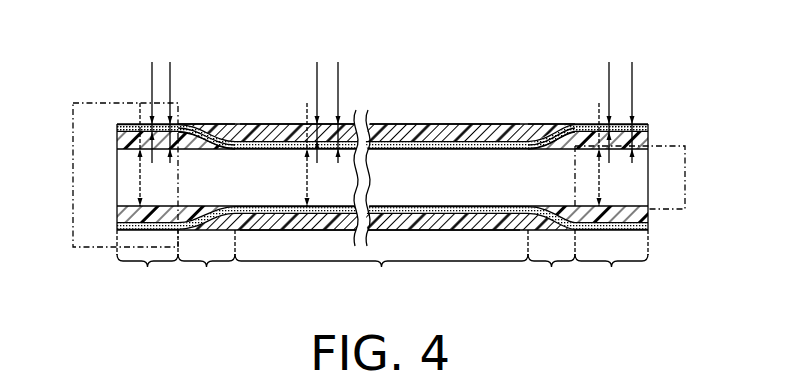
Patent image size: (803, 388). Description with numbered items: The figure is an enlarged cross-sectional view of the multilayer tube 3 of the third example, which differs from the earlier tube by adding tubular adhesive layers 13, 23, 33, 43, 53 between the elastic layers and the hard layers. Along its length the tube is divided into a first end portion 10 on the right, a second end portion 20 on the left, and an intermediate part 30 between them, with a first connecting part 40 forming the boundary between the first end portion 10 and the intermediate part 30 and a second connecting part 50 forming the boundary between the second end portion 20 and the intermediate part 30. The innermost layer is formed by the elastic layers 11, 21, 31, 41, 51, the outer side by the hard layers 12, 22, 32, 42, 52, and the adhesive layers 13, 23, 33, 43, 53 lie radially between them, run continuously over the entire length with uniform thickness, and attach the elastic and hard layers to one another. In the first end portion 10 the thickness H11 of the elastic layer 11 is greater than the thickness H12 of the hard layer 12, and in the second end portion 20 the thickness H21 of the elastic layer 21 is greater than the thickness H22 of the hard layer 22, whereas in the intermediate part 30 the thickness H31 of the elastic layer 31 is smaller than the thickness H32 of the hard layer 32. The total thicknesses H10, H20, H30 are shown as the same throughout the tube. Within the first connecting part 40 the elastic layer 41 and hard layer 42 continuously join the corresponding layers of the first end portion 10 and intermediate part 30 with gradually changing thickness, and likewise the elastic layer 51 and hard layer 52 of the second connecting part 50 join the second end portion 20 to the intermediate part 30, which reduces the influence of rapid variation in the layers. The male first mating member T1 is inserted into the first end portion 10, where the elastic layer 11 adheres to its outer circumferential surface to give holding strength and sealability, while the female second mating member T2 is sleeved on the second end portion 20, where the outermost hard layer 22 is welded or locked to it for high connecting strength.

The multilayer tube 3 is at (645, 68).
The first end portion 10 is at (611, 262).
The elastic layer 11 is at (648, 142).
The hard layer 12 is at (640, 126).
The adhesive layer 13 is at (646, 132).
The second end portion 20 is at (147, 262).
The elastic layer 21 is at (117, 140).
The hard layer 22 is at (128, 127).
The adhesive layer 23 is at (123, 129).
The intermediate part 30 is at (381, 262).
The elastic layer 31 is at (428, 140).
The hard layer 32 is at (396, 129).
The adhesive layer 33 is at (452, 145).
The first connecting part 40 is at (551, 262).
The elastic layer 41 is at (560, 136).
The hard layer 42 is at (552, 133).
The adhesive layer 43 is at (546, 138).
The second connecting part 50 is at (206, 262).
The elastic layer 51 is at (206, 130).
The hard layer 52 is at (210, 135).
The adhesive layer 53 is at (213, 139).
The total thickness H10 is at (623, 112).
The thickness of elastic layer H11 is at (590, 154).
The thickness of hard layer H12 is at (600, 112).
The total thickness H20 is at (162, 112).
The thickness of elastic layer H21 is at (131, 154).
The thickness of hard layer H22 is at (143, 112).
The total thickness H30 is at (329, 112).
The thickness of elastic layer H31 is at (298, 154).
The thickness of hard layer H32 is at (308, 112).
The first mating member T1 is at (672, 210).
The second mating member T2 is at (100, 248).